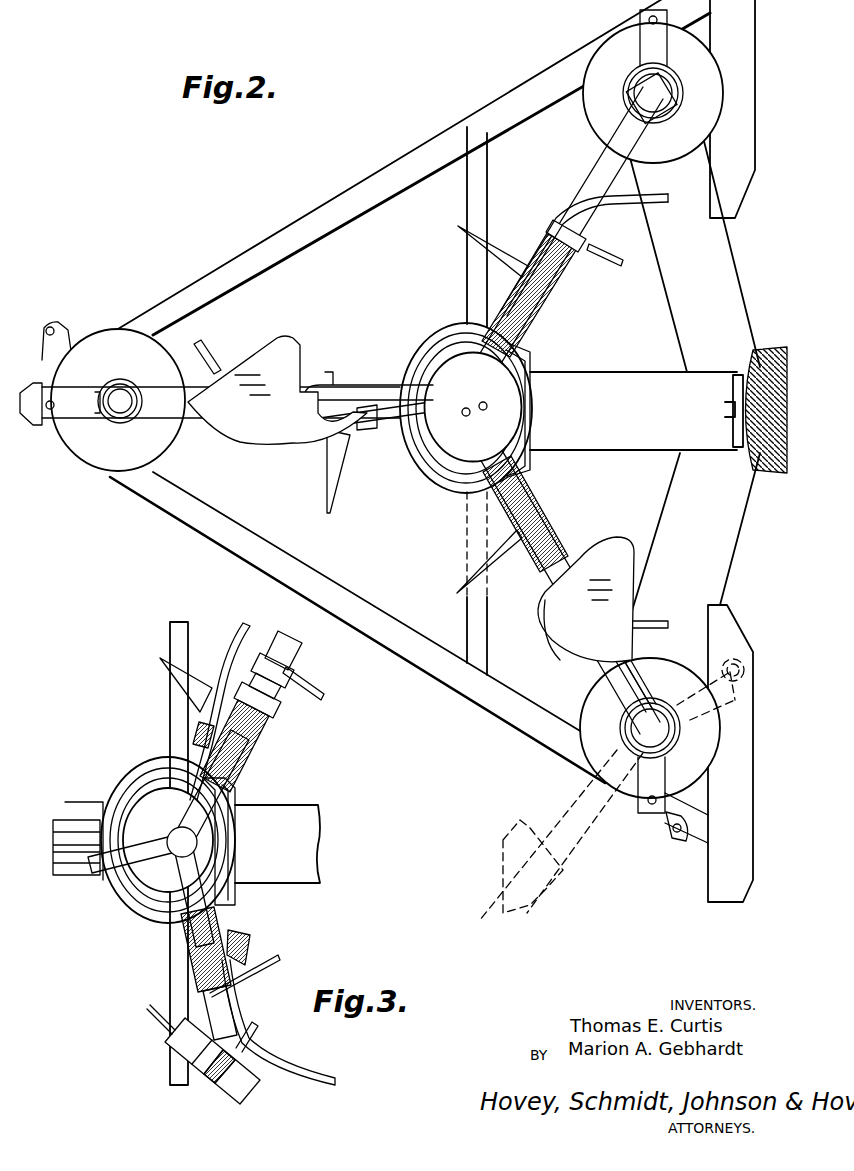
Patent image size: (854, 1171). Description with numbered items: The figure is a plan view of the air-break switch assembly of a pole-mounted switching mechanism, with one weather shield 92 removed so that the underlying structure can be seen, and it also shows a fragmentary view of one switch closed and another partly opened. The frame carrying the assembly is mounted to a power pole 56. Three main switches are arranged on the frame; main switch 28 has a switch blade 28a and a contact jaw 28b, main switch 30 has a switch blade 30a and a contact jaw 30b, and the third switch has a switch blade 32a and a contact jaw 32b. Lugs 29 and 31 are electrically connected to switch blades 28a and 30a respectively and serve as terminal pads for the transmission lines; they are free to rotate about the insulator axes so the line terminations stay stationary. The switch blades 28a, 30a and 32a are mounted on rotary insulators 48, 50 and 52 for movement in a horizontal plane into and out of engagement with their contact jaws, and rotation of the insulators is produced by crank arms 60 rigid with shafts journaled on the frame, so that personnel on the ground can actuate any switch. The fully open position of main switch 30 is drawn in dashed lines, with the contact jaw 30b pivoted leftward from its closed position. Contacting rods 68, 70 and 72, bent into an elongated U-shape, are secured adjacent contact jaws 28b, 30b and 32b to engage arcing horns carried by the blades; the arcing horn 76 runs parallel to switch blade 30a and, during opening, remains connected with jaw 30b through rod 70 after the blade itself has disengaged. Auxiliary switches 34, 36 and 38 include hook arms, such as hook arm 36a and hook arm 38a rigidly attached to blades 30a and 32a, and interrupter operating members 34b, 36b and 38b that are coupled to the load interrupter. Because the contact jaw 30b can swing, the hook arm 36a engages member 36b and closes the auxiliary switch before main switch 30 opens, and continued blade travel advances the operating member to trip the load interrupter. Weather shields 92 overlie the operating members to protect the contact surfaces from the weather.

In FIG. 2, the main switch 28 is at (200, 420).
In FIG. 2, the switch blade 28a is at (173, 420).
In FIG. 2, the contact jaw 28b is at (370, 382).
In FIG. 2, the lug 29 is at (52, 414).
In FIG. 2, the main switch 30 is at (592, 660).
In FIG. 2, the switch blade 30a is at (640, 686).
In FIG. 3, the switch blade 30a is at (240, 1095).
In FIG. 2, the contact jaw 30b is at (545, 488).
In FIG. 3, the contact jaw 30b is at (235, 918).
In FIG. 2, the lug 31 is at (640, 813).
In FIG. 2, the switch blade 32a is at (605, 160).
In FIG. 3, the switch blade 32a is at (305, 650).
In FIG. 2, the contact jaw 32b is at (560, 323).
In FIG. 3, the contact jaw 32b is at (250, 766).
In FIG. 2, the auxiliary switch 34 is at (250, 350).
In FIG. 2, the interrupter operating member 34b is at (228, 333).
In FIG. 2, the auxiliary switch 36 is at (633, 537).
In FIG. 3, the hook arm 36a is at (254, 1030).
In FIG. 2, the interrupter operating member 36b is at (656, 620).
In FIG. 3, the interrupter operating member 36b is at (320, 1075).
In FIG. 2, the auxiliary switch 38 is at (545, 218).
In FIG. 2, the hook arm 38a is at (606, 263).
In FIG. 3, the hook arm 38a is at (325, 697).
In FIG. 2, the interrupter operating member 38b is at (660, 206).
In FIG. 3, the interrupter operating member 38b is at (238, 628).
In FIG. 2, the rotary insulator 48 is at (92, 334).
In FIG. 2, the rotary insulator 50 is at (583, 770).
In FIG. 2, the rotary insulator 52 is at (612, 48).
In FIG. 2, the power pole 56 is at (773, 350).
In FIG. 2, the crank arm 60 is at (678, 835).
In FIG. 2, the contacting rod 68 is at (341, 496).
In FIG. 2, the contacting rod 70 is at (460, 582).
In FIG. 3, the contacting rod 70 is at (280, 960).
In FIG. 2, the contacting rod 72 is at (470, 248).
In FIG. 3, the contacting rod 72 is at (180, 690).
In FIG. 3, the arcing horn 76 is at (150, 1010).
In FIG. 2, the weather shield 92 is at (545, 606).